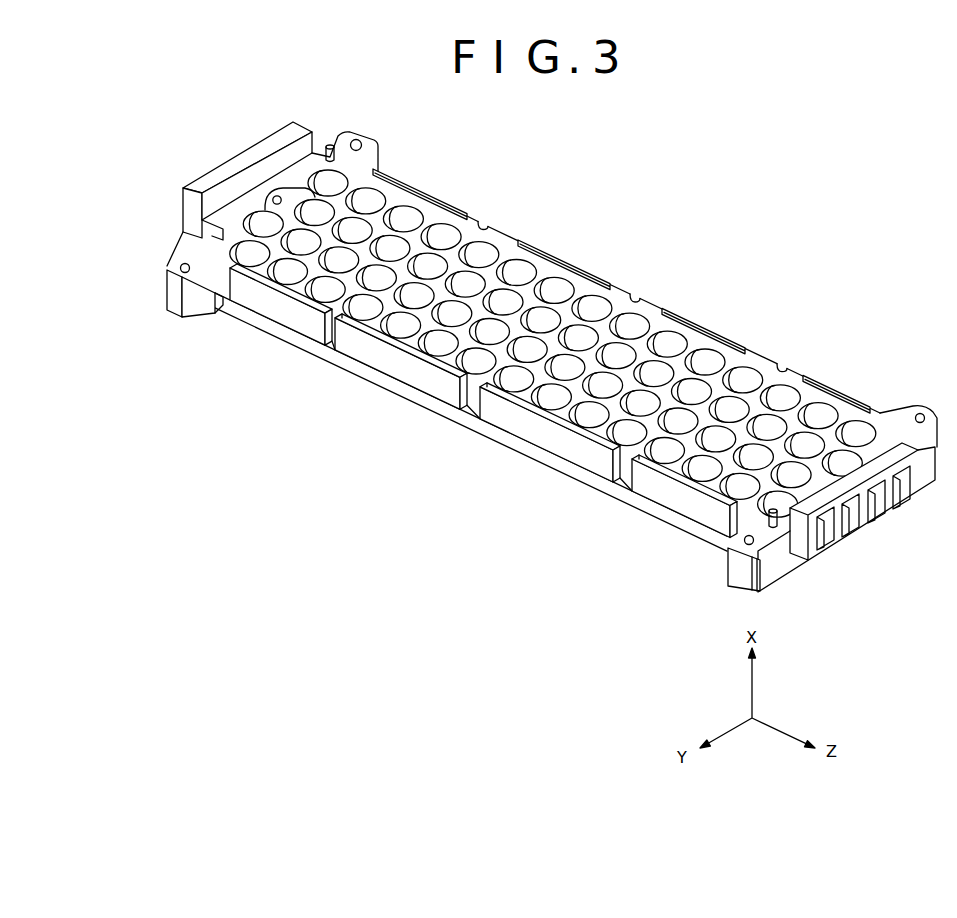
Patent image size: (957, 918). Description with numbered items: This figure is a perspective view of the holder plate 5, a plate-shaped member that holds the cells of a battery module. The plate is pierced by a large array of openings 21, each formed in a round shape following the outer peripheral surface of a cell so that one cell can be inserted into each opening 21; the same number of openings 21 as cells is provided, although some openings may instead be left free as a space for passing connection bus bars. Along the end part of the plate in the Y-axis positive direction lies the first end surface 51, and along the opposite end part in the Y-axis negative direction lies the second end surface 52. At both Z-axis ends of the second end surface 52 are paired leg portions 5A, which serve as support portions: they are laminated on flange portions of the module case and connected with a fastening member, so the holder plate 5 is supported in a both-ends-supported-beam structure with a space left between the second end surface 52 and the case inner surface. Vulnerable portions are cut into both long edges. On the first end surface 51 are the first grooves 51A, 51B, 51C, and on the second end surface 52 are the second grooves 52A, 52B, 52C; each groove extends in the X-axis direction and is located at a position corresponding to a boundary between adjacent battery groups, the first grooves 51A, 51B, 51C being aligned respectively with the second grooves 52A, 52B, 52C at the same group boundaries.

The holder plate 5 is at (622, 250).
The leg portions 5A is at (213, 267).
The opening 21 is at (705, 360).
The first end surface 51 is at (760, 368).
The first groove 51A is at (485, 222).
The first groove 51B is at (637, 297).
The first groove 51C is at (782, 370).
The second end surface 52 is at (562, 447).
The second groove 52A is at (320, 328).
The second groove 52B is at (467, 407).
The second groove 52C is at (613, 483).